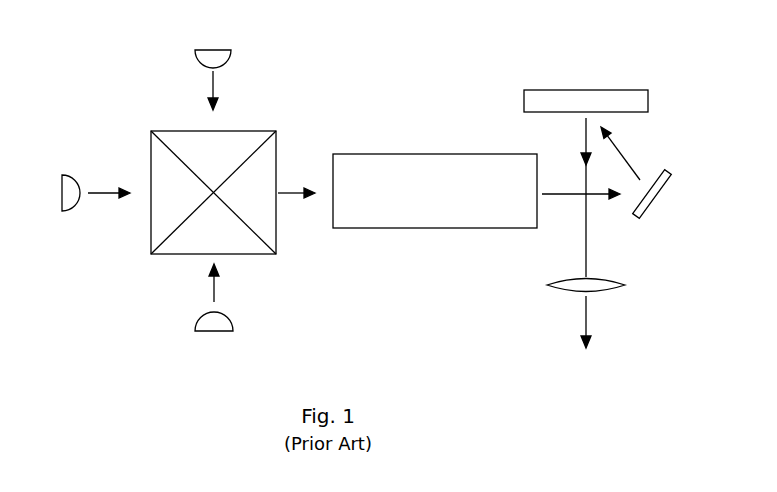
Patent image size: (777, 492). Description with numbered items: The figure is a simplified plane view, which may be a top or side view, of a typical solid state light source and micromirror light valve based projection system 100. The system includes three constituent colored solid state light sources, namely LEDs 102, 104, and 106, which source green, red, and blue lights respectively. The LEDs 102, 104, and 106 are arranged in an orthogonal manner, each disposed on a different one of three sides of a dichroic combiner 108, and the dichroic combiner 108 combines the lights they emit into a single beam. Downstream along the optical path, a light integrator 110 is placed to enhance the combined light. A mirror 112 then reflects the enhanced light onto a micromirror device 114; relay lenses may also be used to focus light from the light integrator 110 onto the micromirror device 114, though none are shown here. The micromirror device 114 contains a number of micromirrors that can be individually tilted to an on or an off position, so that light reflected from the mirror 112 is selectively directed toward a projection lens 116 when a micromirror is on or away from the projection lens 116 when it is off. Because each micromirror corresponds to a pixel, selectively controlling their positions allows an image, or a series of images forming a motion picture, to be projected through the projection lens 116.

The solid state light source based projection system 100 is at (363, 25).
The LED 102 is at (80, 205).
The LED 104 is at (194, 323).
The LED 106 is at (232, 60).
The dichroic combiner 108 is at (257, 255).
The light integrator 110 is at (408, 228).
The mirror 112 is at (657, 200).
The micromirror device 114 is at (606, 90).
The projection lens 116 is at (605, 292).